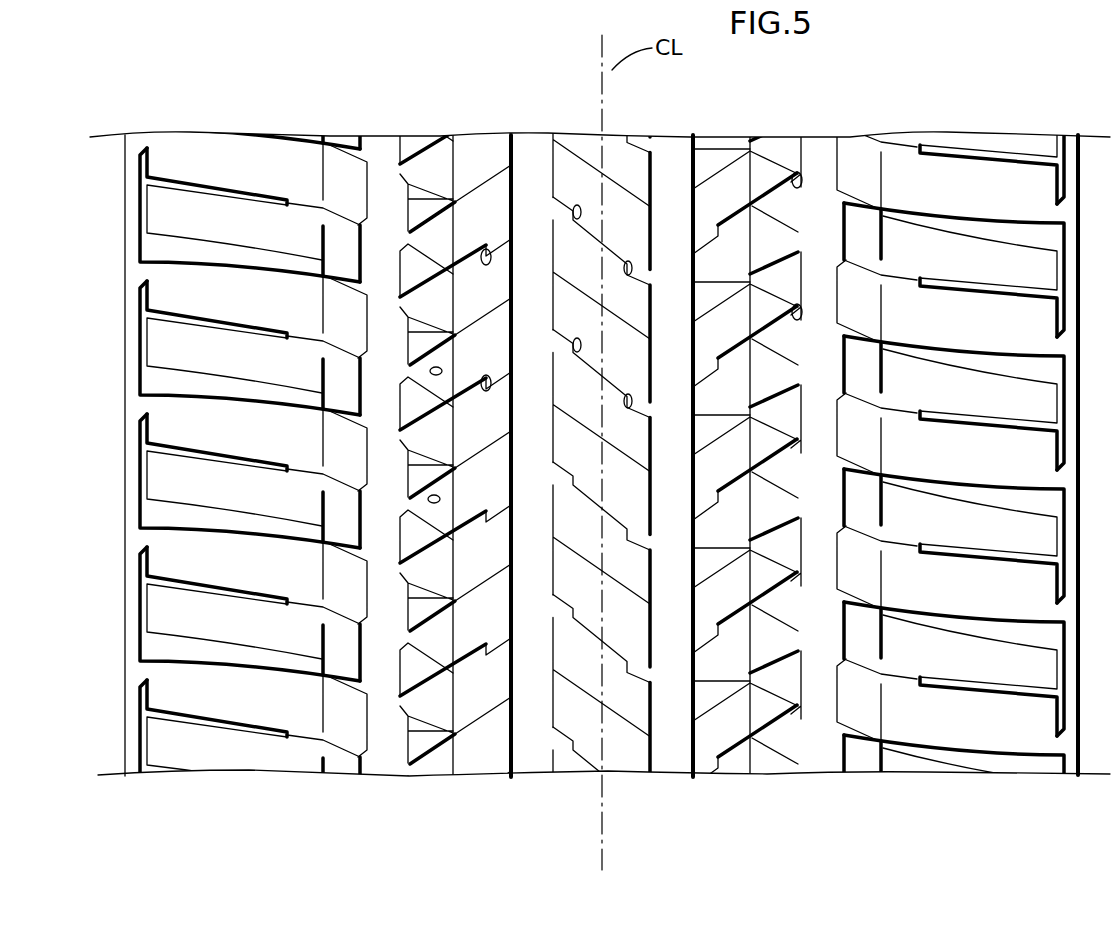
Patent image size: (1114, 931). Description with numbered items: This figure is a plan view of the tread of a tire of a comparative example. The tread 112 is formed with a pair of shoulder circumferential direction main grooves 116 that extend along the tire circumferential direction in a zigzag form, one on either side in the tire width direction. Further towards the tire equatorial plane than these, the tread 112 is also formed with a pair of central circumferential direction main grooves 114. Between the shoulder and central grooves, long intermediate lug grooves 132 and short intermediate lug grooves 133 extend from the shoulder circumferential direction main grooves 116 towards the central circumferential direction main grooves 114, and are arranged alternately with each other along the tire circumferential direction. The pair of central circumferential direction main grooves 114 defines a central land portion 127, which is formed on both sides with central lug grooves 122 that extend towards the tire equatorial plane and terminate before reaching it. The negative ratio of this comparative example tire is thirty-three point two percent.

The tread 112 is at (469, 108).
The central circumferential direction main groove 114 is at (530, 145).
The shoulder circumferential direction main groove 116 is at (383, 145).
The central lug groove 122 is at (578, 218).
The central land portion 127 is at (657, 775).
The long intermediate lug groove 132 is at (486, 250).
The short intermediate lug groove 133 is at (441, 370).